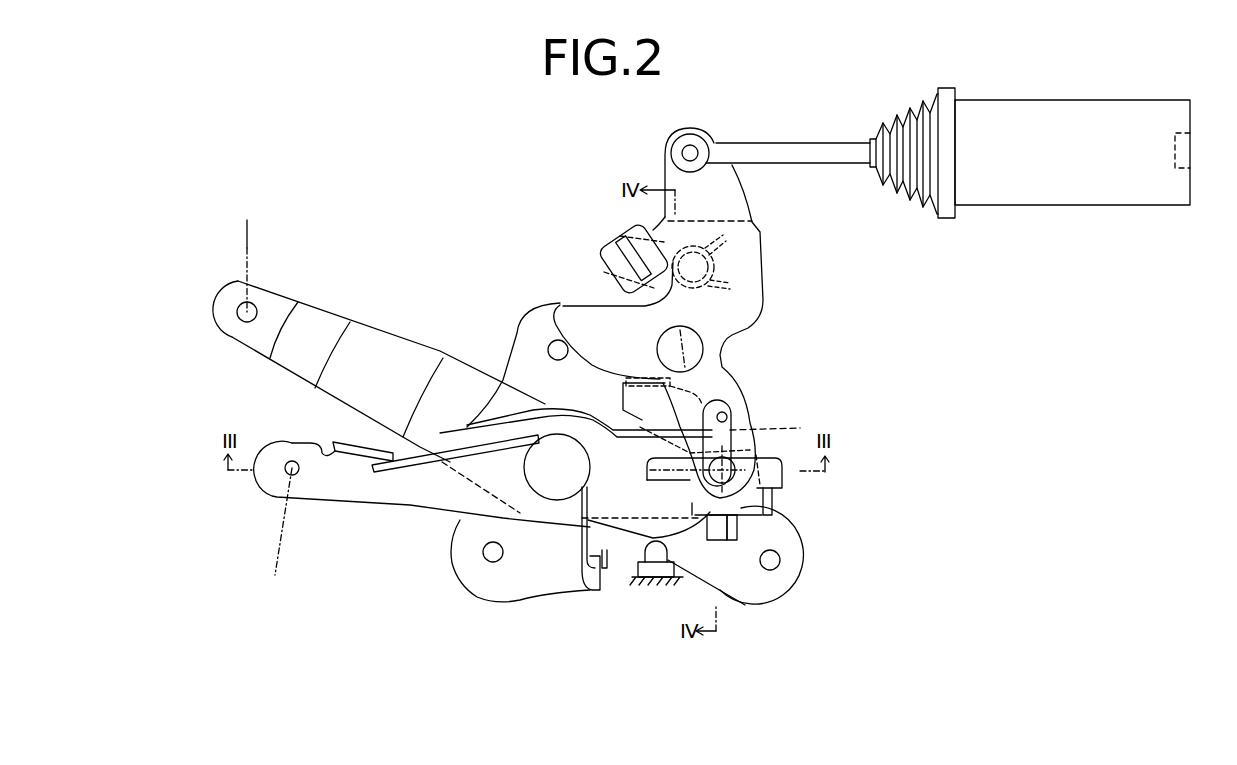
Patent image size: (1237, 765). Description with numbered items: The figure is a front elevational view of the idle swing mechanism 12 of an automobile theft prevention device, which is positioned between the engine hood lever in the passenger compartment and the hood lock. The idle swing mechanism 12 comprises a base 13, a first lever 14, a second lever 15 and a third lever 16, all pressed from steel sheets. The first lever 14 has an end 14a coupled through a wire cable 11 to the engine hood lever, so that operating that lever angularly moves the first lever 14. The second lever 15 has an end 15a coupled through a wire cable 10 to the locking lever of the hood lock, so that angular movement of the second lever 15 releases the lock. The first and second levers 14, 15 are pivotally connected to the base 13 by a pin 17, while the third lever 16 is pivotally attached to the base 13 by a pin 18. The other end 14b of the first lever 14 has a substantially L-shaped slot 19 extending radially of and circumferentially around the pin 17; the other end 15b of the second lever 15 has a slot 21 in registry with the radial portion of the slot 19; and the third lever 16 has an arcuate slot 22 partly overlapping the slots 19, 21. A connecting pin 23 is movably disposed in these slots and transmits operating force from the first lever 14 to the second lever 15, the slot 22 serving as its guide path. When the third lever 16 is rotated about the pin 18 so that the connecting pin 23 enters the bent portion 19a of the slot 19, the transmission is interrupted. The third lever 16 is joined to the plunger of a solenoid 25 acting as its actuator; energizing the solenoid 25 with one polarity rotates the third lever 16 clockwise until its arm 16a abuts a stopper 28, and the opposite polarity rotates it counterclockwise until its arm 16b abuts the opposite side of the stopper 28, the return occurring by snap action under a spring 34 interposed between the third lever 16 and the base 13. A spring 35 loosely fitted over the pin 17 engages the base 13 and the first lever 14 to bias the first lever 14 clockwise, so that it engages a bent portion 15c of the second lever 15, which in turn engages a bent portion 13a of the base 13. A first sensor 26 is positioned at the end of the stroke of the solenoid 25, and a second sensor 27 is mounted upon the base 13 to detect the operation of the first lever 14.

The wire cable 10 is at (246, 243).
The wire cable 11 is at (283, 517).
The idle swing mechanism 12 is at (512, 172).
The base 13 is at (520, 340).
The bent portion of the base 13a is at (750, 562).
The first lever 14 is at (448, 502).
The end of the first lever 14a is at (307, 480).
The other end of the first lever 14b is at (688, 497).
The second lever 15 is at (347, 400).
The end of the second lever 15a is at (278, 298).
The other end of the second lever 15b is at (747, 507).
The bent portion of the second lever 15c is at (770, 497).
The third lever 16 is at (721, 373).
The arm of the third lever 16a is at (553, 308).
The arm of the third lever 16b is at (660, 233).
The pin 17 is at (553, 490).
The pin 18 is at (657, 336).
The L-shaped slot 19 is at (658, 470).
The bent portion of the slot 19a is at (642, 470).
The slot 21 is at (695, 460).
The slot 22 is at (720, 417).
The connecting pin 23 is at (722, 468).
The solenoid 25 is at (1007, 190).
The first sensor 26 is at (1192, 137).
The second sensor 27 is at (660, 580).
The stopper 28 is at (602, 240).
The spring 34 is at (712, 262).
The spring 35 is at (445, 453).